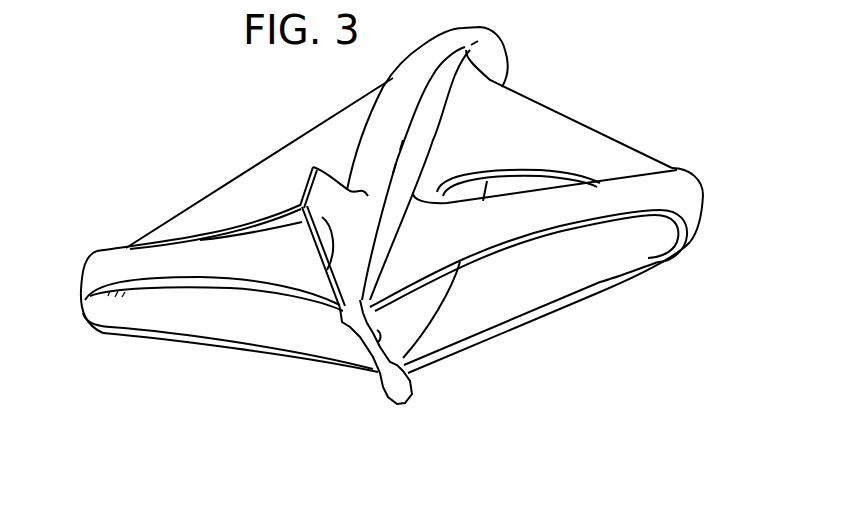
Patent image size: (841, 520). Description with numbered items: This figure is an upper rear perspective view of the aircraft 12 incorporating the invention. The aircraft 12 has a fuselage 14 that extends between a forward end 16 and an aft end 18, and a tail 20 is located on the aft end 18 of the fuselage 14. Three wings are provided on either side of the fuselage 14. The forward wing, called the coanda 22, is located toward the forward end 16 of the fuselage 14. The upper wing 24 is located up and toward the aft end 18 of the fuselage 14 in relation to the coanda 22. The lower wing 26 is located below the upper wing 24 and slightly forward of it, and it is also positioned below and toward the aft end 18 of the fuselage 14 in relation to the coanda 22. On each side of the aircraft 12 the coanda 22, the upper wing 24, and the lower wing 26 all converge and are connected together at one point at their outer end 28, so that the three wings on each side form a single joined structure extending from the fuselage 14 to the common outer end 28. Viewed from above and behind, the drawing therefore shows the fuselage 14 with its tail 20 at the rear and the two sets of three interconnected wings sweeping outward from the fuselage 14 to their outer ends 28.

The aircraft 12 is at (662, 79).
The fuselage 14 is at (412, 75).
The forward end 16 is at (498, 28).
The aft end 18 is at (375, 352).
The tail 20 is at (331, 283).
The coanda 22 is at (277, 153).
The upper wing 24 is at (175, 241).
The lower wing 26 is at (203, 345).
The outer end 28 is at (82, 282).